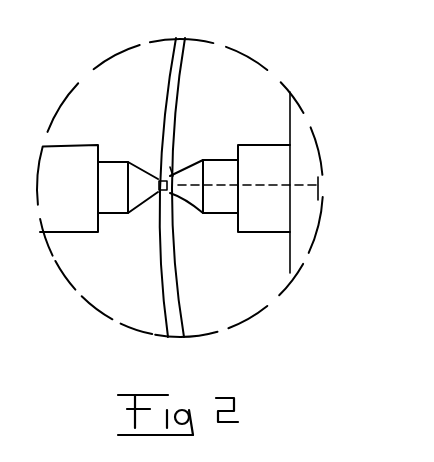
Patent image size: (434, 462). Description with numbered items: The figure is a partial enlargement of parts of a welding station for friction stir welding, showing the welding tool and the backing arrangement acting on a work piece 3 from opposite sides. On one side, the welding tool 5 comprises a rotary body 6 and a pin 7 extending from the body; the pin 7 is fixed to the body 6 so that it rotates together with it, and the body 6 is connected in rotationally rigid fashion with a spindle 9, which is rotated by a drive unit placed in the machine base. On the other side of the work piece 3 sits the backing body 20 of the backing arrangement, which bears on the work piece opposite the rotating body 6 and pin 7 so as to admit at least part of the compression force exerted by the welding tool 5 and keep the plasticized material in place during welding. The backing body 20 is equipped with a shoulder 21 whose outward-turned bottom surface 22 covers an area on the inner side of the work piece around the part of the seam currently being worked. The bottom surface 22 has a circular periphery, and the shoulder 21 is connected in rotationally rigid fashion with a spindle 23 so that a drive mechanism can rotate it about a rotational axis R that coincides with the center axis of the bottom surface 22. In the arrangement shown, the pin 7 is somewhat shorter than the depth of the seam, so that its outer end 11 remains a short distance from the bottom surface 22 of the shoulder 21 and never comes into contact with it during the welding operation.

The work piece 3 is at (168, 84).
The welding tool 5 is at (102, 180).
The rotary body 6 is at (144, 166).
The pin 7 is at (167, 192).
The spindle 9 is at (72, 233).
The outer end of the pin 11 is at (167, 190).
The backing body 20 is at (230, 167).
The shoulder 21 is at (178, 199).
The bottom surface 22 is at (170, 167).
The spindle 23 is at (257, 153).
The rotational axis R is at (300, 184).